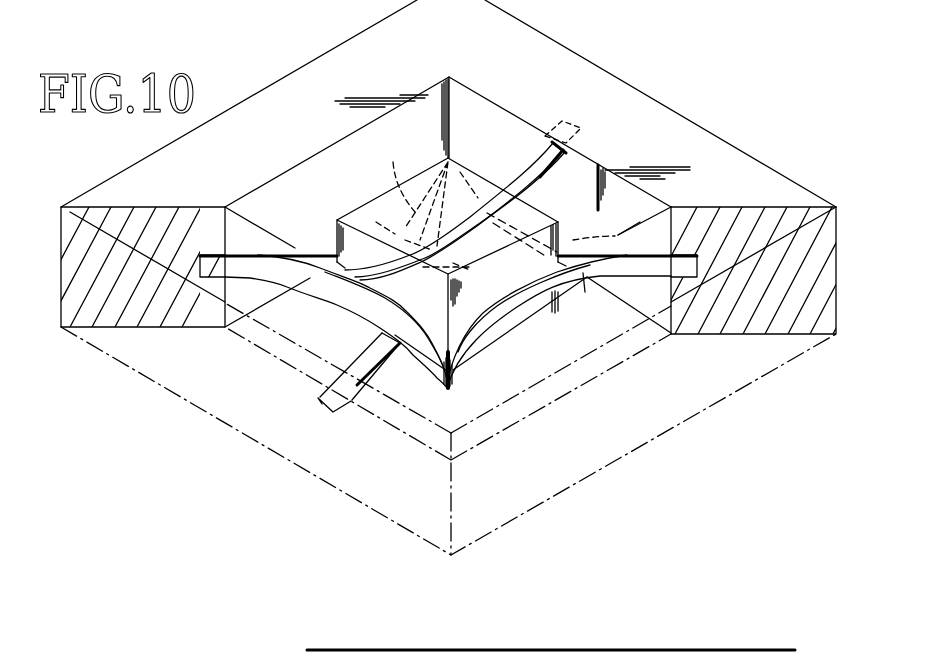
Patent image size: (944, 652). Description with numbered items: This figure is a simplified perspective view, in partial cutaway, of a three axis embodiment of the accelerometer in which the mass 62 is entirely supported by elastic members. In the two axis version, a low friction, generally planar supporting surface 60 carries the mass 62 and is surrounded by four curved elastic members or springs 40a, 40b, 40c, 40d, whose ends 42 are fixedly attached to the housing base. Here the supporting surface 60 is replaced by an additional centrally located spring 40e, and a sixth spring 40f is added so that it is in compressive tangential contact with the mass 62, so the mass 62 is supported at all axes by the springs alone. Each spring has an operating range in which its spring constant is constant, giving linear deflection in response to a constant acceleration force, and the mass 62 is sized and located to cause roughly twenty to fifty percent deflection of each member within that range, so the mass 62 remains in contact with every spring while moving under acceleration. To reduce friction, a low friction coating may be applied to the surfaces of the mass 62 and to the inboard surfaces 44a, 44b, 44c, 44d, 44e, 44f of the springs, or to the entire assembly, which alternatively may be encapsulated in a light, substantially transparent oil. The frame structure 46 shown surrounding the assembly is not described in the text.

The curved elastic member 40a is at (410, 200).
The curved elastic member 40b is at (593, 240).
The curved elastic member 40c is at (645, 272).
The curved elastic member 40d is at (258, 265).
The centrally located spring 40e is at (362, 353).
The sixth spring 40f is at (500, 190).
The spring ends 42 is at (213, 262).
The inboard surface 44a is at (333, 257).
The inboard surface 44b is at (570, 236).
The inboard surface 44c is at (581, 278).
The inboard surface 44d is at (395, 290).
The inboard surface 44e is at (360, 387).
The inboard surface 44f is at (565, 162).
The frame 46 is at (528, 160).
The supporting surface 60 is at (556, 362).
The mass 62 is at (494, 254).